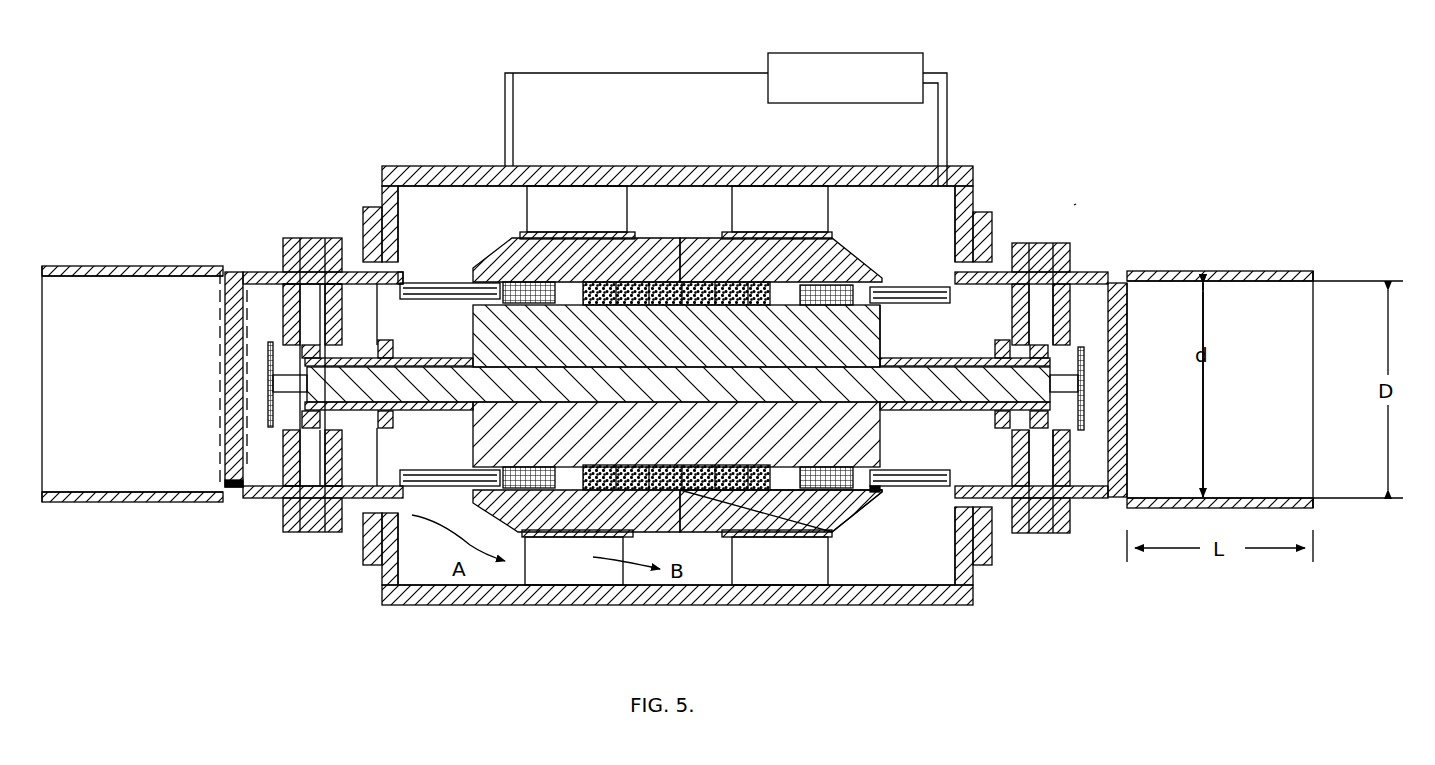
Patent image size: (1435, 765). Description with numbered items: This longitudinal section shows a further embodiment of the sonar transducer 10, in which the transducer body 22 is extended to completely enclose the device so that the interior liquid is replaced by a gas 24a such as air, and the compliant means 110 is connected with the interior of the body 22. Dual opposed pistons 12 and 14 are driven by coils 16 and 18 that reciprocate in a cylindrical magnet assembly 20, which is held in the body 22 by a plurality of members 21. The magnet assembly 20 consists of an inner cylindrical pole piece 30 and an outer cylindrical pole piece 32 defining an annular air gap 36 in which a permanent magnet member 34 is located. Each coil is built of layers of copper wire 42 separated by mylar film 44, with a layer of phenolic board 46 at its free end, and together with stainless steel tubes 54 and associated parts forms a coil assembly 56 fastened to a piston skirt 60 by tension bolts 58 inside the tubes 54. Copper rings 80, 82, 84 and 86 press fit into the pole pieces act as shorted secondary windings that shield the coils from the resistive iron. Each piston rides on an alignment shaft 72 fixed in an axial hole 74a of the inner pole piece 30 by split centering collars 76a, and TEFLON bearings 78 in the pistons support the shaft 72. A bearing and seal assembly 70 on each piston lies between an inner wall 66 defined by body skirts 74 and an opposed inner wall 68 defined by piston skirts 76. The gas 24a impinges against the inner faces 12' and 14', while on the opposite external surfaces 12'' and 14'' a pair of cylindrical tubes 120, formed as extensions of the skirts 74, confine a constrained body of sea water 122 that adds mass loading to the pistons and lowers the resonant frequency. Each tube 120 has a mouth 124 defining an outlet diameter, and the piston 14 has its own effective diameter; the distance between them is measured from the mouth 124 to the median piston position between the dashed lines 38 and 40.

The sonar transducer 10 is at (1075, 205).
The piston 12 is at (206, 379).
The inner face of piston 12' is at (272, 398).
The external surface of piston 12'' is at (207, 469).
The piston 14 is at (1145, 390).
The inner face of piston 14' is at (1084, 403).
The external surface of piston 14'' is at (1159, 390).
The coil 16 is at (515, 275).
The coil 18 is at (845, 272).
The magnet assembly 20 is at (828, 238).
The members 21 is at (520, 186).
The transducer body 22 is at (677, 386).
The gas 24a is at (676, 385).
The inner cylindrical pole piece 30 is at (695, 336).
The outer cylindrical pole piece 32 is at (680, 282).
The permanent magnet member 34 is at (712, 265).
The annular air gap 36 is at (640, 272).
The dashed line 38 is at (215, 319).
The dashed line 40 is at (250, 322).
The copper wire layers 42 is at (818, 312).
The mylar film 44 is at (835, 268).
The phenolic board layer 46 is at (580, 262).
The stainless steel tubes 54 is at (672, 353).
The coil assembly 56 is at (505, 296).
The tension bolts 58 is at (455, 296).
The piston skirt 60 is at (410, 283).
The inner wall 66 is at (288, 268).
The opposed inner wall 68 is at (330, 290).
The bearing and seal assembly 70 is at (1085, 272).
The alignment shaft 72 is at (425, 362).
The skirts 74 is at (1015, 533).
The axial hole 74a is at (648, 368).
The piston skirts 76 is at (352, 482).
The split centering collars 76a is at (850, 372).
The TEFLON bearings 78 is at (310, 395).
The copper ring 80 is at (498, 470).
The copper ring 82 is at (485, 492).
The copper ring 84 is at (862, 465).
The copper ring 86 is at (882, 492).
The compliant means 110 is at (882, 103).
The cylindrical tubes 120 is at (140, 502).
The constrained body of sea water 122 is at (1332, 240).
The mouth 124 is at (1314, 440).